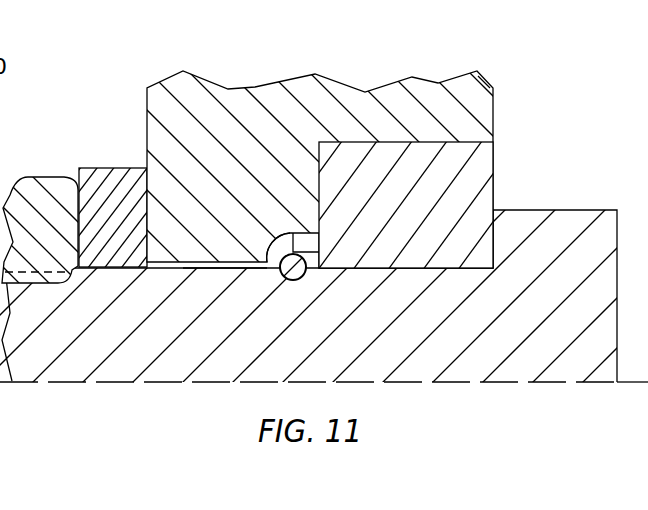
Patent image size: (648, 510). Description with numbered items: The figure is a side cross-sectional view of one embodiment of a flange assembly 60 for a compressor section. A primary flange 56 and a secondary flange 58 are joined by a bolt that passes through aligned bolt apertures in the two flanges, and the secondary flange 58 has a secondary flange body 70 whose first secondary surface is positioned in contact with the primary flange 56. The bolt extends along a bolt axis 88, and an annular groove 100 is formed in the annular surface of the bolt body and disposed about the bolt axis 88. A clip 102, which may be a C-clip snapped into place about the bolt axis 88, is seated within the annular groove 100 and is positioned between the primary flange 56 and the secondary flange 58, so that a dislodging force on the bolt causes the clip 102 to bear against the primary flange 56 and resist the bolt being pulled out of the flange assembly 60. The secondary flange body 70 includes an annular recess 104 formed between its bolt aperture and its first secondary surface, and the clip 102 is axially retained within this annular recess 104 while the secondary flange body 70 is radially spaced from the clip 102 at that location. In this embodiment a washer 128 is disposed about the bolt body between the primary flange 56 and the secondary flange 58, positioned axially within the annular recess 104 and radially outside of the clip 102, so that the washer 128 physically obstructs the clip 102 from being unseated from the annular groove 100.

The primary flange 56 is at (505, 186).
The secondary flange 58 is at (246, 108).
The flange assembly 60 is at (543, 82).
The secondary flange body 70 is at (168, 123).
The bolt axis 88 is at (643, 385).
The annular groove 100 is at (272, 274).
The clip 102 is at (292, 281).
The annular recess 104 is at (266, 232).
The washer 128 is at (308, 236).